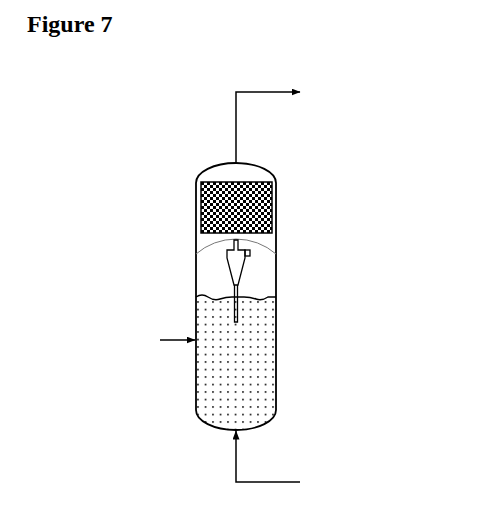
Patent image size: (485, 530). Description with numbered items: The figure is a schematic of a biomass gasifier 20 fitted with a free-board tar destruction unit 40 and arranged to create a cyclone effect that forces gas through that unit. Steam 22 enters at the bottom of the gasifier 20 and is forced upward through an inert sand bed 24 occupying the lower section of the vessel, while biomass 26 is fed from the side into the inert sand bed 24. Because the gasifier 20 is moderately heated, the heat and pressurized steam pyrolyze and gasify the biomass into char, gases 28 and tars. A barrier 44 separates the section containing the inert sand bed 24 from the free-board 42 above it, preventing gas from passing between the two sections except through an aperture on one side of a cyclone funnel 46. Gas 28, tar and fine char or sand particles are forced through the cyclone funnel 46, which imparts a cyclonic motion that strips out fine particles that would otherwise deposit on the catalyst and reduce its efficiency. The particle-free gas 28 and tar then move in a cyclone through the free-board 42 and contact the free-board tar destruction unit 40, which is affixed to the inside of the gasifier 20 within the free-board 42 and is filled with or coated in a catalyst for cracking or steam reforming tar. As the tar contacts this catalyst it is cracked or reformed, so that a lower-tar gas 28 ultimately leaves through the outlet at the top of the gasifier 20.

The biomass gasifier 20 is at (178, 173).
The steam 22 is at (287, 463).
The inert sand bed 24 is at (258, 393).
The biomass 26 is at (162, 340).
The gases 28 is at (288, 122).
The free-board tar destruction unit 40 is at (258, 198).
The free-board 42 is at (288, 173).
The barrier 44 is at (205, 250).
The cyclone funnel 46 is at (250, 257).